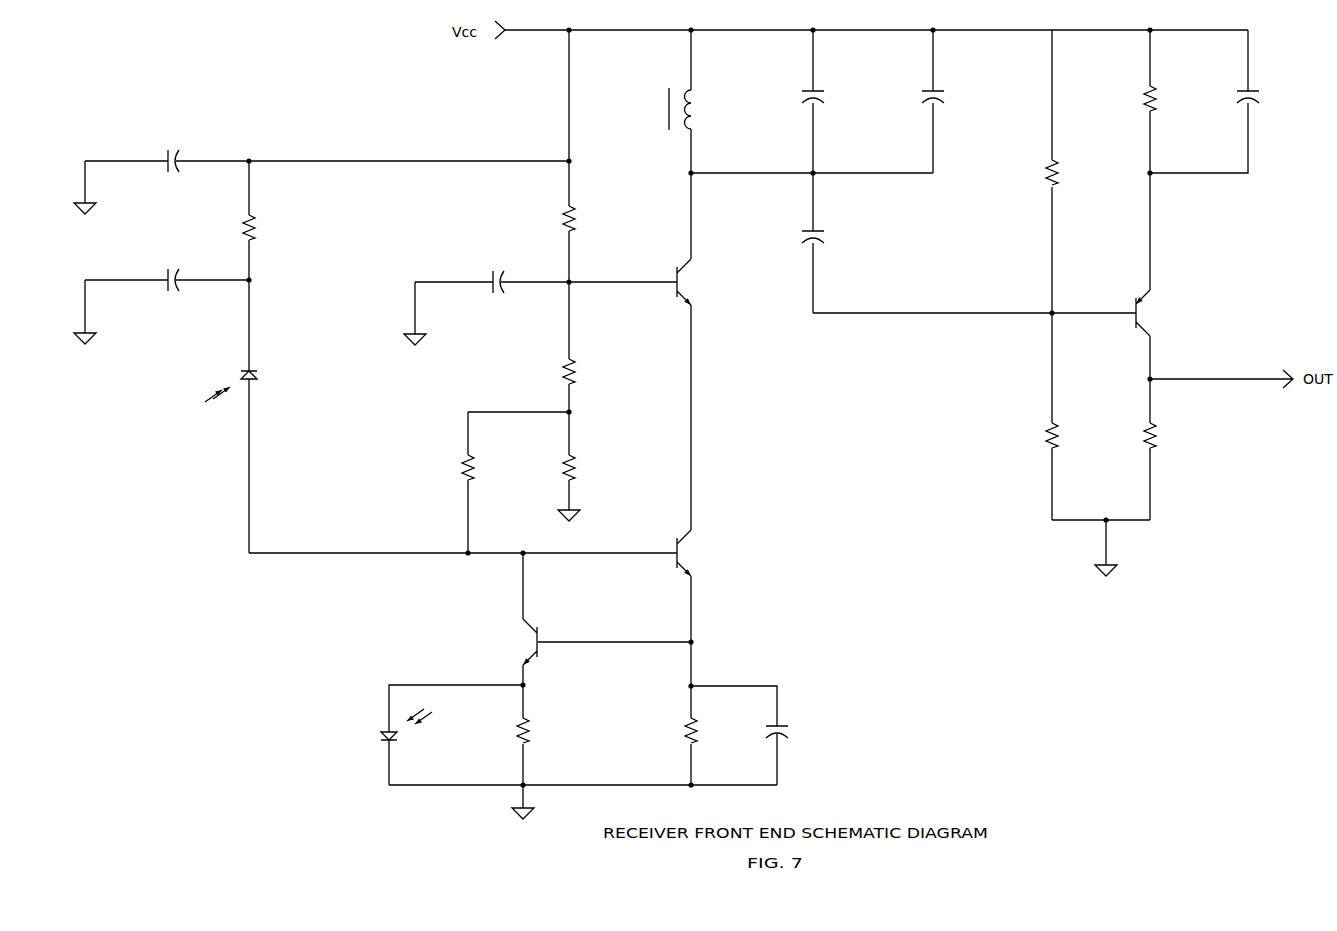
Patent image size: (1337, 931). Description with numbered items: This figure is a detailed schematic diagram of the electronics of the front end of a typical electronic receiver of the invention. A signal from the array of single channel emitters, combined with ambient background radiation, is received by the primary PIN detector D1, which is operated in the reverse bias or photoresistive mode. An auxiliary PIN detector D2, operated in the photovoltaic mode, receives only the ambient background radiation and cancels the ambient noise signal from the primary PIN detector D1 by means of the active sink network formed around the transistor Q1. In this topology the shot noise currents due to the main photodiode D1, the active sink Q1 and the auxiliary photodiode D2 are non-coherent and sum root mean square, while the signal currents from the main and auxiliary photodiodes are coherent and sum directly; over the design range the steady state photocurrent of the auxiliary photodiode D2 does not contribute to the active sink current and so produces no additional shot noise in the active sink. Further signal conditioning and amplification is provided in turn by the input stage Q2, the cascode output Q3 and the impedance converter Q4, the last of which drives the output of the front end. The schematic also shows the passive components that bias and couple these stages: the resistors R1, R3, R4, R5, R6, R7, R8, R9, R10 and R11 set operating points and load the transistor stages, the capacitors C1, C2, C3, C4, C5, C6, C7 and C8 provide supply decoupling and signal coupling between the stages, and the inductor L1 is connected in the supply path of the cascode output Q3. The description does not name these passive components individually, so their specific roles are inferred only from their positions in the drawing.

The capacitor 1uF/16V C1 is at (806, 725).
The capacitor 10uF/10V C2 is at (163, 280).
The capacitor 1uF/16V C3 is at (494, 283).
The capacitor 10uF/10V C4 is at (163, 162).
The capacitor 1000pF C5 is at (841, 95).
The capacitor 810pF C6 is at (958, 95).
The capacitor 0.022 C7 is at (835, 236).
The capacitor 0.022 C8 is at (1269, 95).
The resistors 3.3K and 20K R1 is at (627, 732).
The resistor 10M R3 is at (491, 466).
The resistor 5.1K R4 is at (593, 466).
The resistor 10K R5 is at (591, 369).
The resistor 10K R6 is at (591, 218).
The resistor 1K R7 is at (267, 226).
The resistor 120K R8 is at (1078, 436).
The resistor 27K R9 is at (1073, 173).
The resistor 5.1K R10 is at (1174, 99).
The resistor 1.8K R11 is at (1174, 436).
The inductor 20mH L1 is at (709, 108).
The active sink network Q1 is at (488, 642).
The input stage Q2 is at (719, 553).
The cascode output Q3 is at (719, 282).
The impedance converter Q4 is at (1174, 313).
The primary PIN detector D1 is at (262, 382).
The auxiliary PIN detector D2 is at (371, 728).